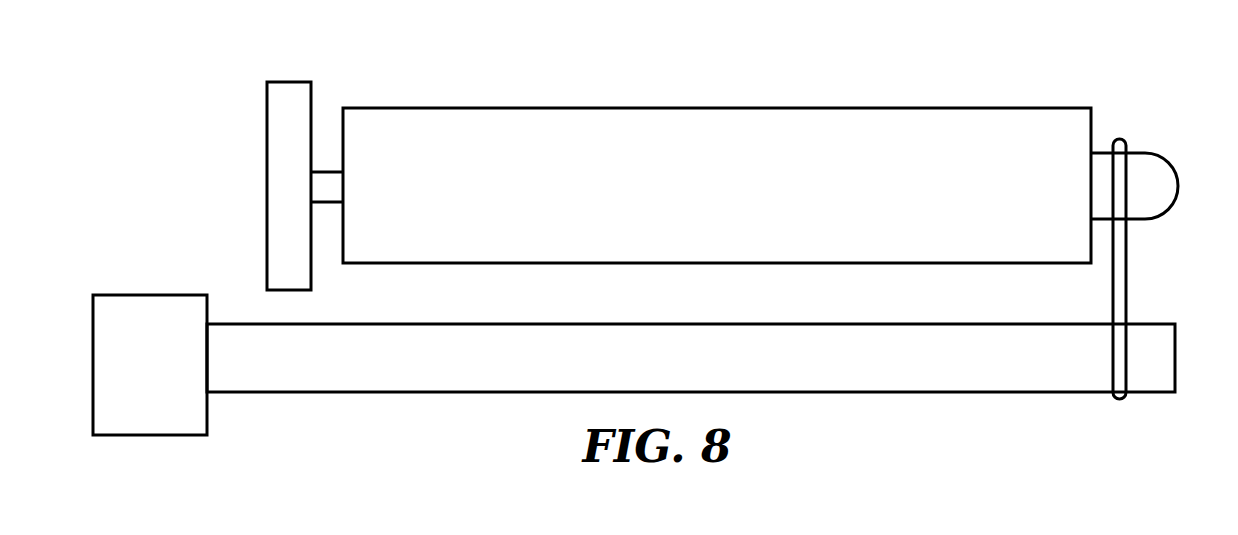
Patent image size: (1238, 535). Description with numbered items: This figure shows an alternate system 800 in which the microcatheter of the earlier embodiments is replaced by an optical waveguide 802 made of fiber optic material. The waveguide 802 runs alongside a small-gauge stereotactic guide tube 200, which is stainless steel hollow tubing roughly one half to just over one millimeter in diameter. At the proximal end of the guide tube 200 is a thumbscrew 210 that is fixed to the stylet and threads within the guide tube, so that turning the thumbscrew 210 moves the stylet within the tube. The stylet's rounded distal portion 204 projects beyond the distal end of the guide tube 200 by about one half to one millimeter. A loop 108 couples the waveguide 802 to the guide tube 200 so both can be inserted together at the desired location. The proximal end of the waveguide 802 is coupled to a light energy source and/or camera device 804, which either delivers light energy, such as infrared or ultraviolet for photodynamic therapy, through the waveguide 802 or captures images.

The system 800 is at (903, 58).
The guide tube 200 is at (786, 107).
The thumbscrew 210 is at (291, 105).
The rounded distal portion 204 is at (1155, 165).
The loop 108 is at (1118, 240).
The optical waveguide 802 is at (691, 358).
The light energy source and/or camera device 804 is at (150, 365).